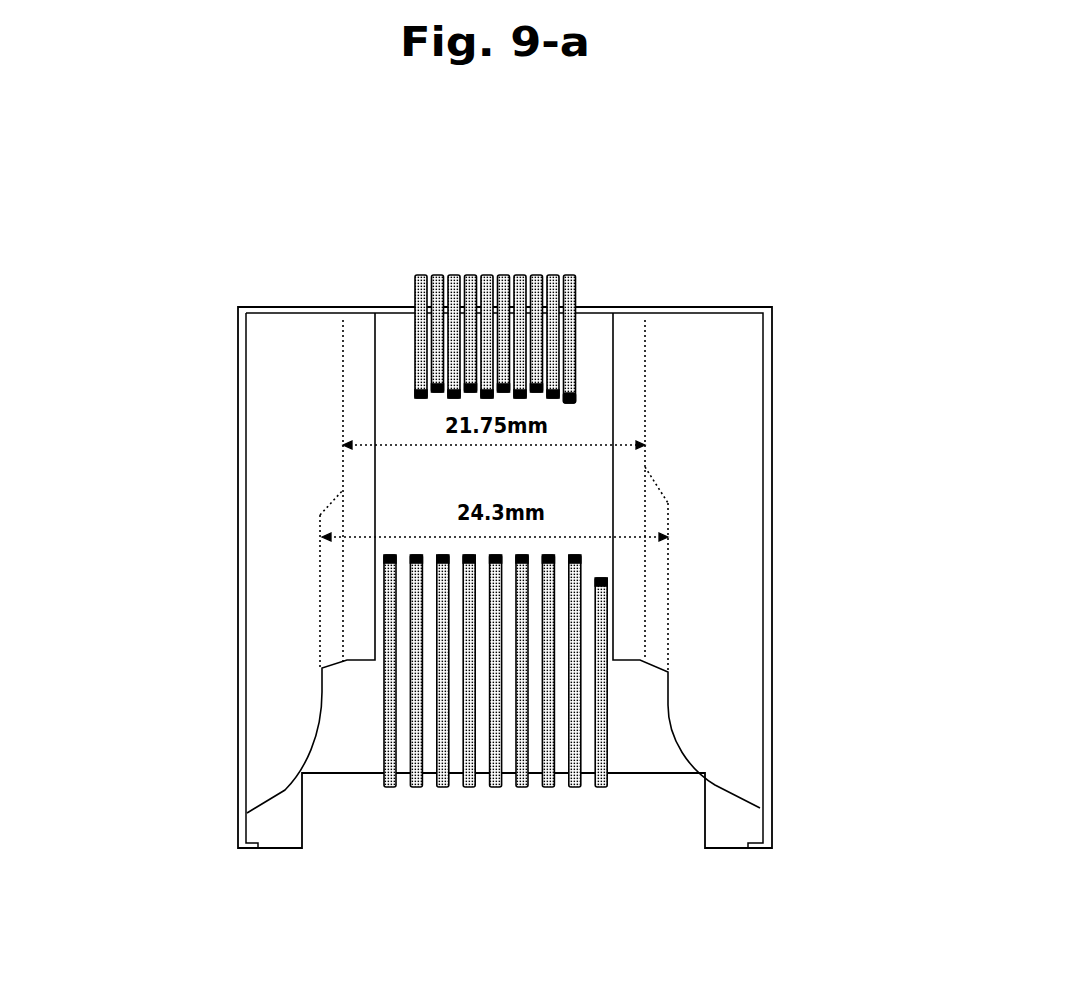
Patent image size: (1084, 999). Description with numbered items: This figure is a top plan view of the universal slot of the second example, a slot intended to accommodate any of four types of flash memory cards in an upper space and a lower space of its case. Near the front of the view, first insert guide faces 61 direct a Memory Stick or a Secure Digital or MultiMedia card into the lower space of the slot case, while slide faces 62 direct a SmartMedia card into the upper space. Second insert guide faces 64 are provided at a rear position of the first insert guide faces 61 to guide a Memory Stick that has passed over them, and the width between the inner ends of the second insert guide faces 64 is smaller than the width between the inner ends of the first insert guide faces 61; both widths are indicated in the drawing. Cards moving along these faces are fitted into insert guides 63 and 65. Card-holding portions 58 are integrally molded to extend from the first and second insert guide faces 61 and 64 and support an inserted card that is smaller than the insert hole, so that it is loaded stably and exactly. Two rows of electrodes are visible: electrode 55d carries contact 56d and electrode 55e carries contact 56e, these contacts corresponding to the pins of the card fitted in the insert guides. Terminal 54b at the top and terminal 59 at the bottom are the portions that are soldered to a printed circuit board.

The terminal 54b is at (666, 316).
The electrode 55d is at (575, 335).
The contact 56d is at (575, 395).
The card-holding portion 58 is at (622, 459).
The contact 56e is at (580, 563).
The electrode 55e is at (578, 695).
The terminal 59 is at (656, 699).
The first insert guide face 61 is at (267, 787).
The slide face 62 is at (282, 697).
The insert guide 63 is at (320, 613).
The second insert guide face 64 is at (335, 496).
The insert guide 65 is at (343, 430).